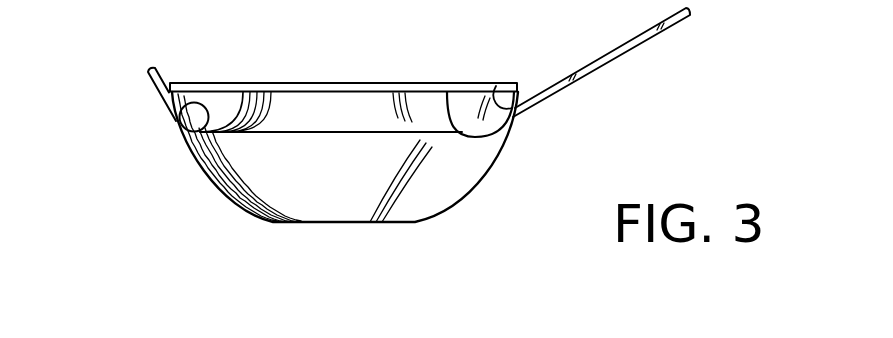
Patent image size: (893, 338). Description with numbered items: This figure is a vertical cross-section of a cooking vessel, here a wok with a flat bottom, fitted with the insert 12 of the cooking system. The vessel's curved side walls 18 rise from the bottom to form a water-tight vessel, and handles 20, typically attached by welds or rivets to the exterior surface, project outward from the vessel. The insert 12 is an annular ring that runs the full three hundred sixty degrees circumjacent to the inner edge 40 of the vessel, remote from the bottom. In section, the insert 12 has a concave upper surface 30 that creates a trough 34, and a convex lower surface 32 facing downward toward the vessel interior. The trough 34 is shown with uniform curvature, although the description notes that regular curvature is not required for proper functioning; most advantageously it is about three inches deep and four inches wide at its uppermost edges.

The insert 12 is at (312, 107).
The side walls 18 is at (481, 172).
The handles 20 is at (153, 84).
The concave upper surface 30 is at (205, 133).
The convex lower surface 32 is at (242, 142).
The trough 34 is at (470, 102).
The inner edge 40 is at (496, 86).